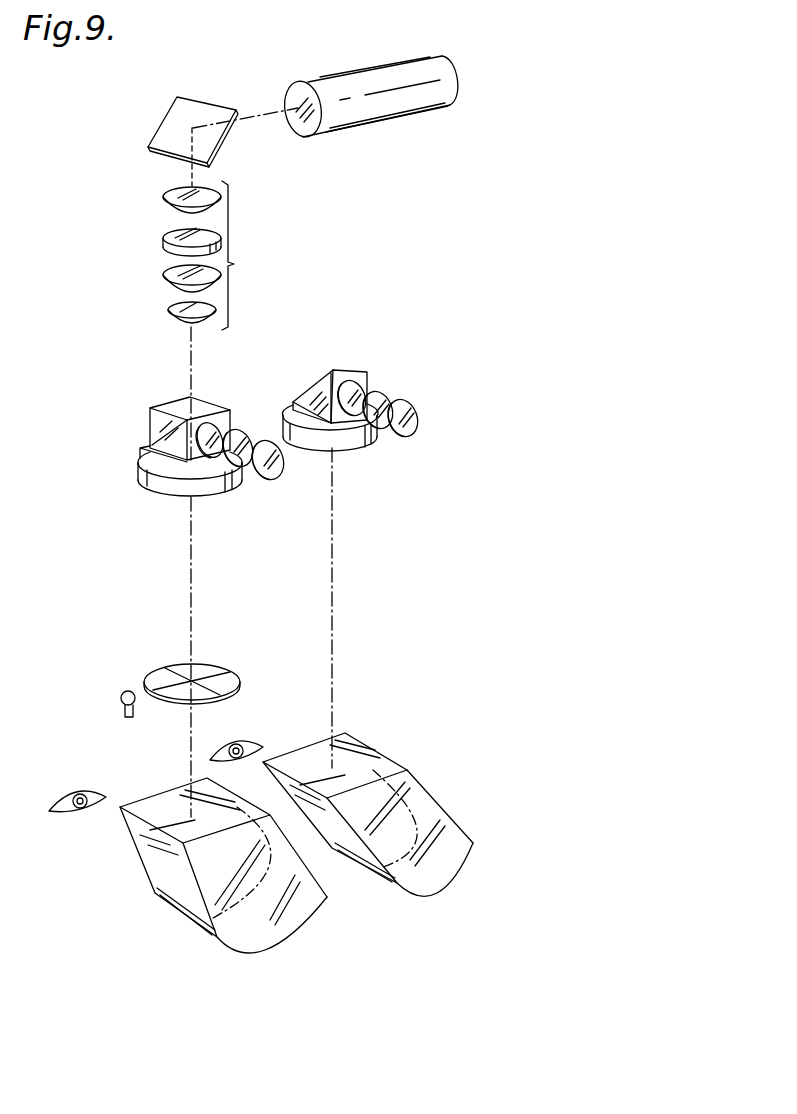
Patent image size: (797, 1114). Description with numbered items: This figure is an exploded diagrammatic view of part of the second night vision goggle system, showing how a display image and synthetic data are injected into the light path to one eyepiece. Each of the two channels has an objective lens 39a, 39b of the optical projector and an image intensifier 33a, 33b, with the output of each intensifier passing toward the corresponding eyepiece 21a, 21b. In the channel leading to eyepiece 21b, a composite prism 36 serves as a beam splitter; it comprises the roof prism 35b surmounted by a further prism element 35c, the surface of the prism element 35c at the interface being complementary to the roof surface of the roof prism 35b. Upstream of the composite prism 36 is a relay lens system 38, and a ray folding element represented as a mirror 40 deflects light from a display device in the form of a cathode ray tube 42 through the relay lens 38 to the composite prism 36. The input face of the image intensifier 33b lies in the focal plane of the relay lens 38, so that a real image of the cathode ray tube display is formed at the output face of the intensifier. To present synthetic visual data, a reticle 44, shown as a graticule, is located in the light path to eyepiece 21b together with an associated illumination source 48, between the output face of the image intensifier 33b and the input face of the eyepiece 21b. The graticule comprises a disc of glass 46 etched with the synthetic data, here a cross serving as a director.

The eyepiece 21a is at (541, 850).
The eyepiece 21b is at (218, 937).
The image intensifier 33a is at (352, 450).
The image intensifier 33b is at (213, 497).
The roof prism 35b is at (172, 457).
The further prism element 35c is at (252, 379).
The composite prism 36 is at (173, 409).
The relay lens system 38 is at (233, 264).
The objective lens 39a is at (385, 382).
The objective lens 39b is at (208, 463).
The mirror 40 is at (207, 102).
The cathode ray tube 42 is at (403, 38).
The reticle 44 is at (220, 658).
The disc of glass 46 is at (240, 680).
The illumination source 48 is at (122, 697).